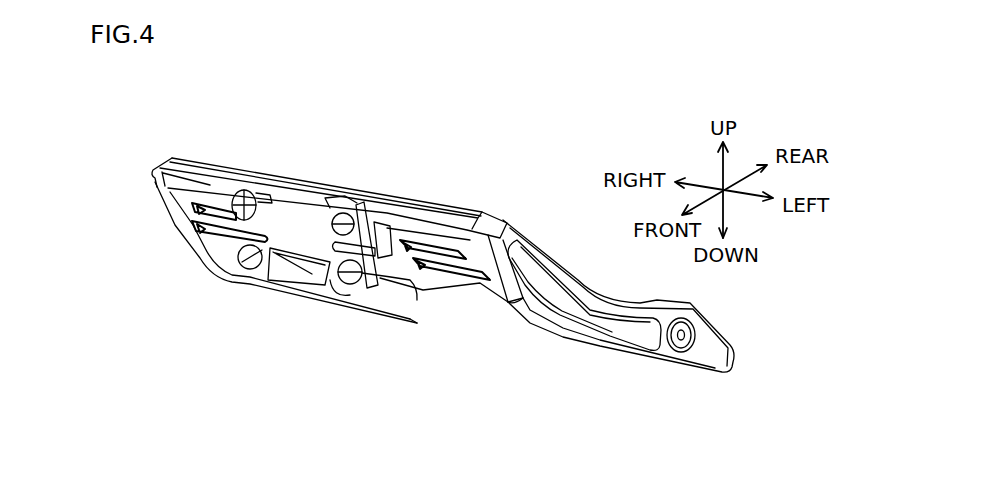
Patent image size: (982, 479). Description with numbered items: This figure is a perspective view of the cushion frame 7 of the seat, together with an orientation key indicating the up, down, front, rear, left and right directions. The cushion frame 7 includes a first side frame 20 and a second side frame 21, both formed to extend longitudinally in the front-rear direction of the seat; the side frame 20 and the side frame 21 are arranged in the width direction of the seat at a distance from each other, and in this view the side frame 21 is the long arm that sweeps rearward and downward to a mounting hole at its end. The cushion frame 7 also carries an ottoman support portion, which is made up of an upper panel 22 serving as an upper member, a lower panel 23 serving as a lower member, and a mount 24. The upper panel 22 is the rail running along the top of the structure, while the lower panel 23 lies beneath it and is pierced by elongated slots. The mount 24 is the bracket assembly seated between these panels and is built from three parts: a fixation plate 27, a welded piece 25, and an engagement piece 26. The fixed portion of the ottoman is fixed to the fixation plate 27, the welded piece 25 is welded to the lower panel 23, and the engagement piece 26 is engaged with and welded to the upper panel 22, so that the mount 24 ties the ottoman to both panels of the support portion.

The cushion frame 7 is at (175, 115).
The side frame 20 is at (208, 278).
The side frame 21 is at (622, 350).
The upper panel 22 is at (441, 190).
The lower panel 23 is at (428, 272).
The mount 24 is at (389, 96).
The welded piece 25 is at (384, 198).
The engagement piece 26 is at (305, 189).
The fixation plate 27 is at (350, 195).